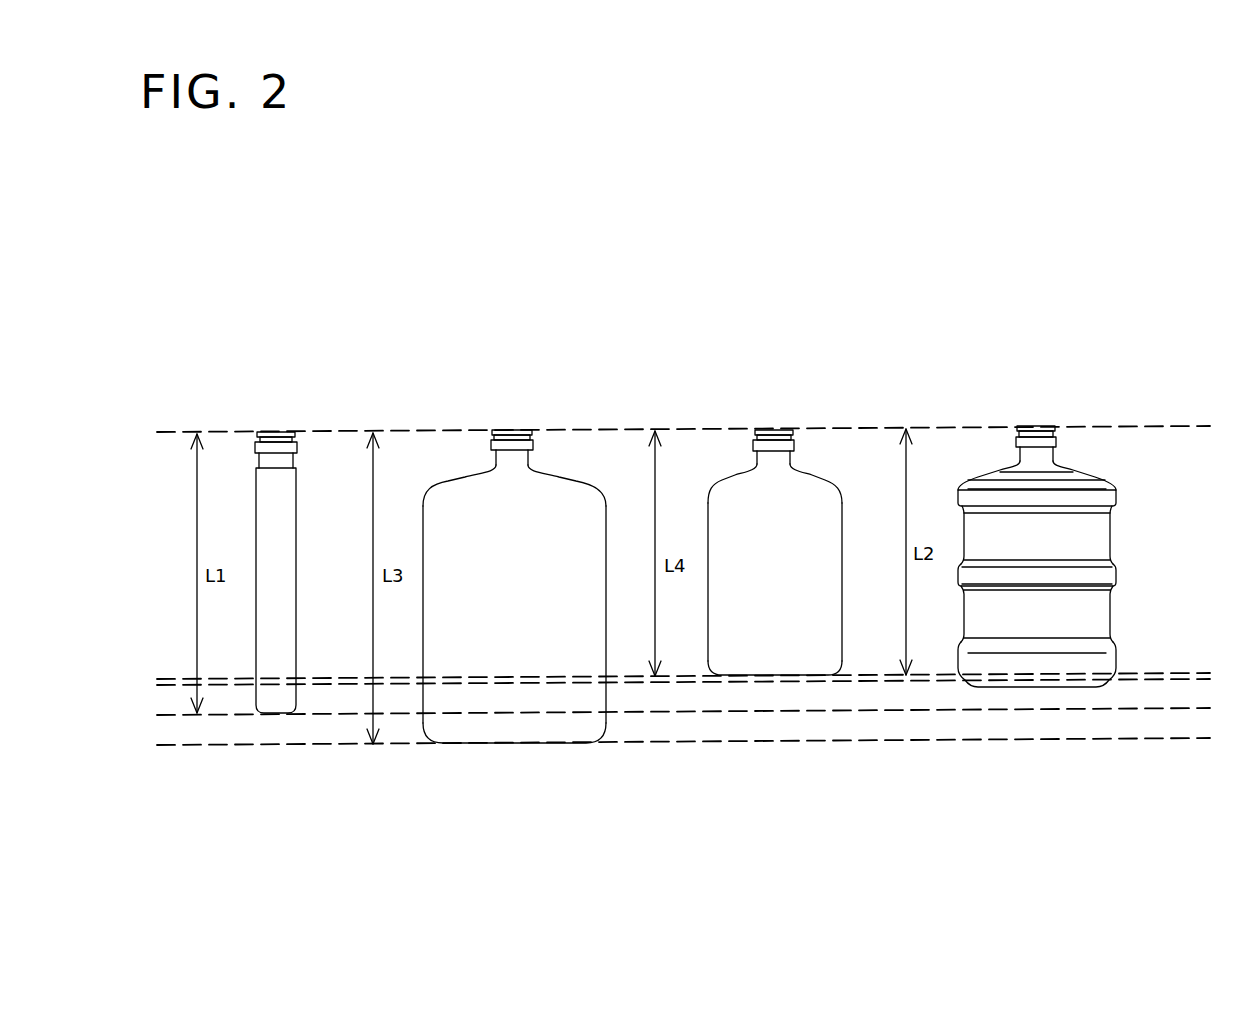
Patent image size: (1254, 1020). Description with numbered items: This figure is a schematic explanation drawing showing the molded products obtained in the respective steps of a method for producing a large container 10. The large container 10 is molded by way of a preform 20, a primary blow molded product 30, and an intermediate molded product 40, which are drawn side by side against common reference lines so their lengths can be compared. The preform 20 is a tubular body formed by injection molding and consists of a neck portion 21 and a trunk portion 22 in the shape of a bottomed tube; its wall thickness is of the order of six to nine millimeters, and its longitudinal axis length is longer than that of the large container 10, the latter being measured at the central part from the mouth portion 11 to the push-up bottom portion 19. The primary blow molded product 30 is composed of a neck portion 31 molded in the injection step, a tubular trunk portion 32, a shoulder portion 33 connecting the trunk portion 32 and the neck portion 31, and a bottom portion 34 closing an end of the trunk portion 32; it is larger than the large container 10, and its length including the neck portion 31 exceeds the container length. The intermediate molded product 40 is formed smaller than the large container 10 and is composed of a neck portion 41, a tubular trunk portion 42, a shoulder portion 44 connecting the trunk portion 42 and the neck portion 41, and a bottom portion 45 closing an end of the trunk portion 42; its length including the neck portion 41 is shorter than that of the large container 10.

The large container 10 is at (1077, 370).
The mouth portion 11 is at (1035, 426).
The push-up bottom portion 19 is at (1044, 697).
The preform 20 is at (289, 370).
The neck portion 21 is at (272, 432).
The trunk portion 22 is at (273, 648).
The primary blow molded product 30 is at (534, 370).
The neck portion 31 is at (510, 440).
The trunk portion 32 is at (600, 600).
The shoulder portion 33 is at (566, 476).
The bottom portion 34 is at (514, 735).
The intermediate molded product 40 is at (795, 370).
The neck portion 41 is at (773, 440).
The trunk portion 42 is at (843, 581).
The shoulder portion 44 is at (818, 477).
The bottom portion 45 is at (775, 672).